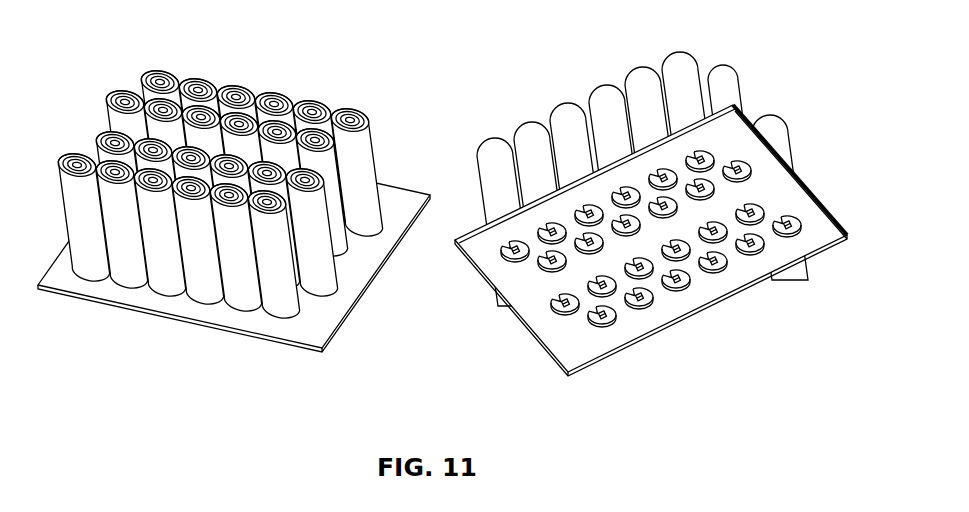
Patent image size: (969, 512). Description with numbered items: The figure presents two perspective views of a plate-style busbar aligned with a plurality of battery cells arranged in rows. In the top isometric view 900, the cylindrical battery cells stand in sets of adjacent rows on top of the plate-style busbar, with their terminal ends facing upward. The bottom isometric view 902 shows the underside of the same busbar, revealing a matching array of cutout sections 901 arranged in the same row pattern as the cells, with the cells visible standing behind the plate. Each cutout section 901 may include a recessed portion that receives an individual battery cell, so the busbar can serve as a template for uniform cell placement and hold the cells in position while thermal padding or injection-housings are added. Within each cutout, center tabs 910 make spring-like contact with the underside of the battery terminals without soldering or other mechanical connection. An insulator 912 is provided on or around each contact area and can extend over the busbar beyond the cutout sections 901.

The top isometric view 900 is at (234, 207).
The bottom isometric view 902 is at (663, 214).
The center tabs 910 is at (768, 245).
The insulator 912 is at (802, 223).
The cutout sections 901 is at (697, 278).